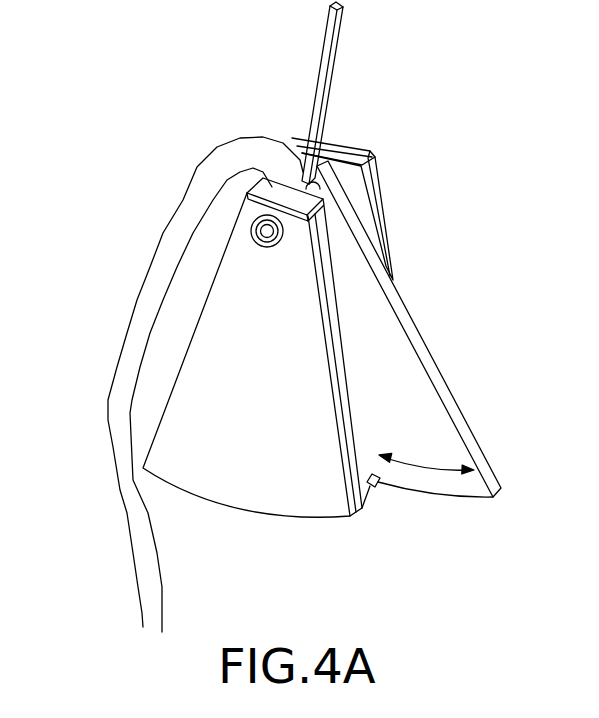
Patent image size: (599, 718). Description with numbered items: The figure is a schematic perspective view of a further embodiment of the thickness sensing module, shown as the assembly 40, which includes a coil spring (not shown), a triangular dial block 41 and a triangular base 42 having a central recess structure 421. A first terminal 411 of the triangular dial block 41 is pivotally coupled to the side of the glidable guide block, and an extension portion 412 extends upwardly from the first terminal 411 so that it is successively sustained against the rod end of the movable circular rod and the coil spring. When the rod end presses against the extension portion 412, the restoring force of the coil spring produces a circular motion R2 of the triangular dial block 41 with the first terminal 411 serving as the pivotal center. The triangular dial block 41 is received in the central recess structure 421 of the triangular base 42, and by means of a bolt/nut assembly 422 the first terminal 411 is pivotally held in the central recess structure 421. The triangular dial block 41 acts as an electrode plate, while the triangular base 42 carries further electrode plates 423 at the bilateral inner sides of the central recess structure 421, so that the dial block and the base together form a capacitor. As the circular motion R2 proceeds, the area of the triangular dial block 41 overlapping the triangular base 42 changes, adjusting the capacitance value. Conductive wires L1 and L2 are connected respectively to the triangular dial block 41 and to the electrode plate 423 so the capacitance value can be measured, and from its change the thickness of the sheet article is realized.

The hinge assembly 40 is at (541, 59).
The triangular dial block 41 is at (381, 366).
The first terminal 411 is at (340, 147).
The extension portion 412 is at (320, 83).
The triangular base 42 is at (247, 485).
The central recess structure 421 is at (378, 485).
The bolt/nut assembly 422 is at (254, 218).
The electrode plates 423 is at (293, 188).
The conductive wire L1 is at (145, 290).
The conductive wire L2 is at (143, 357).
The circular motion R2 is at (420, 458).